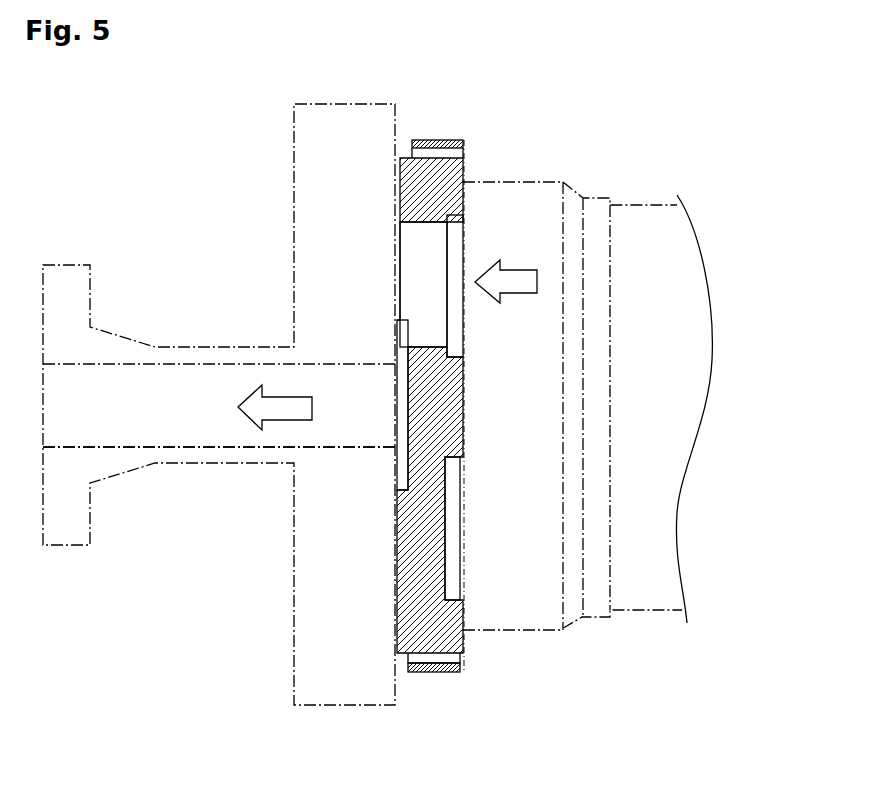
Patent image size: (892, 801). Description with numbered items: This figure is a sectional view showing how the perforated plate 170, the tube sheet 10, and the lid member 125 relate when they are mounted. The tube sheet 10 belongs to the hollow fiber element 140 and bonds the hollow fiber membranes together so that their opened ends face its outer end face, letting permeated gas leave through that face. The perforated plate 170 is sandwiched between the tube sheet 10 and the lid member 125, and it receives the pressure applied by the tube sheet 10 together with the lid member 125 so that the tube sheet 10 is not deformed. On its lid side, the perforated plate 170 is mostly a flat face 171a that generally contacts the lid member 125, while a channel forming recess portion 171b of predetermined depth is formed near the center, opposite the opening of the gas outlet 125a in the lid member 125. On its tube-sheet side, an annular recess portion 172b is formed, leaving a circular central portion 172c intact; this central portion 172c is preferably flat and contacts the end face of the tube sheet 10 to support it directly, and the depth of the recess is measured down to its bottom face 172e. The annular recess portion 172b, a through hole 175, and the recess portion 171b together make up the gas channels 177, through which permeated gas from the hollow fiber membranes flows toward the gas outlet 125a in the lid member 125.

The tube sheet 10 is at (515, 185).
The lid member 125 is at (305, 163).
The gas outlet 125a is at (168, 447).
The hollow fiber element 140 is at (665, 188).
The perforated plate 170 is at (360, 411).
The flat face 171a is at (395, 577).
The channel forming recess portion 171b is at (400, 337).
The recess portion 172b is at (450, 265).
The central portion 172c is at (462, 410).
The bottom face 172e is at (447, 583).
The through hole 175 is at (405, 280).
The gas channels 177 is at (215, 182).